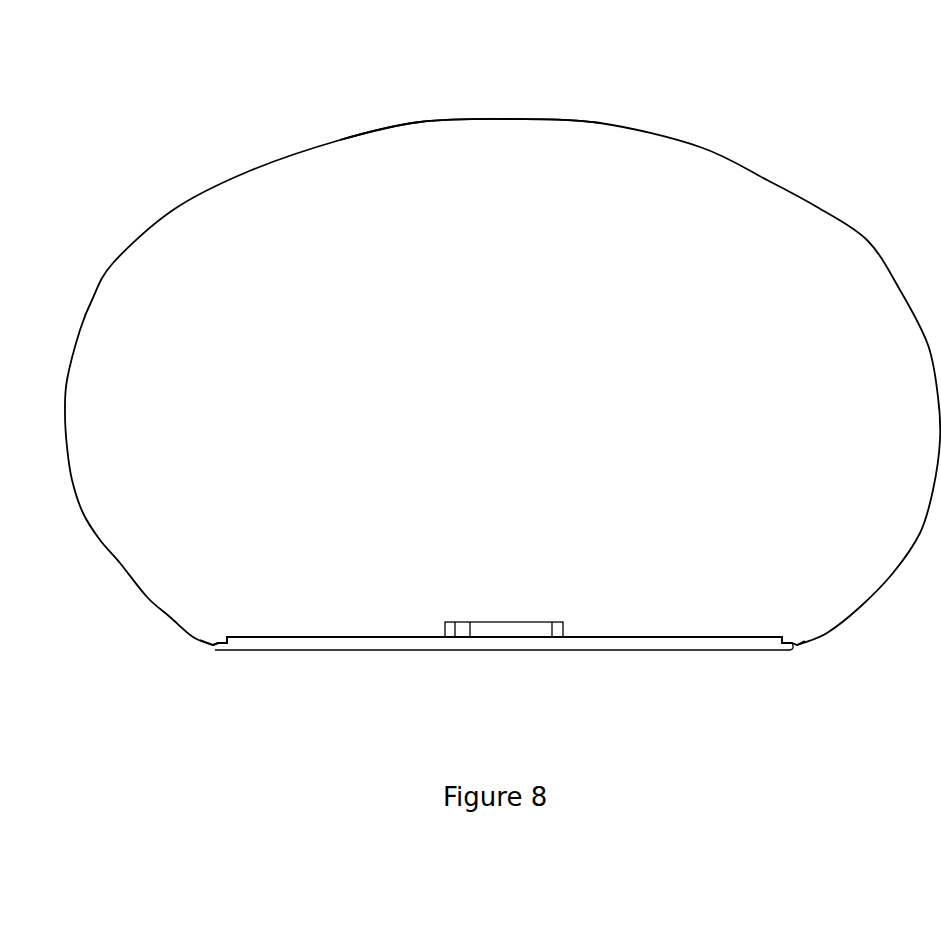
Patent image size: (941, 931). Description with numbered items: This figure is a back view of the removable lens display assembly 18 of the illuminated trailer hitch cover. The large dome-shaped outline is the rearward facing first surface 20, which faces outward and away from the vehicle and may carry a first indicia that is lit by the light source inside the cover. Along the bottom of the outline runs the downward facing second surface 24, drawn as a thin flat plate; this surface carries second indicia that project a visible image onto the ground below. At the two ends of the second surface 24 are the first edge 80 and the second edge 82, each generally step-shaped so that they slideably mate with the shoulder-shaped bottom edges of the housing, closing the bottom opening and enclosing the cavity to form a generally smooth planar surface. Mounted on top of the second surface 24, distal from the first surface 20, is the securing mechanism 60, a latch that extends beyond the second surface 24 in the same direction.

The lens display assembly 18 is at (822, 102).
The first surface 20 is at (251, 190).
The second surface 24 is at (686, 650).
The securing mechanism 60 is at (533, 628).
The first edge 80 is at (209, 659).
The second edge 82 is at (802, 667).